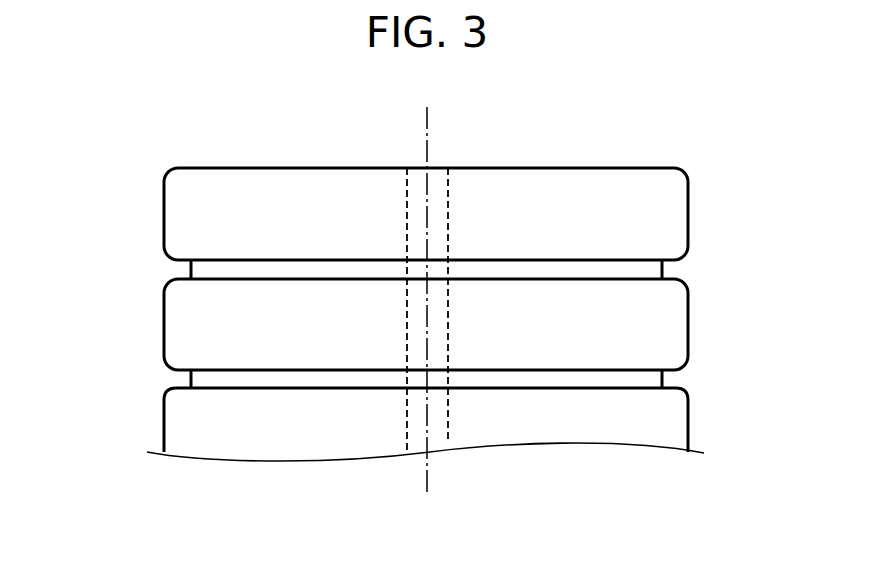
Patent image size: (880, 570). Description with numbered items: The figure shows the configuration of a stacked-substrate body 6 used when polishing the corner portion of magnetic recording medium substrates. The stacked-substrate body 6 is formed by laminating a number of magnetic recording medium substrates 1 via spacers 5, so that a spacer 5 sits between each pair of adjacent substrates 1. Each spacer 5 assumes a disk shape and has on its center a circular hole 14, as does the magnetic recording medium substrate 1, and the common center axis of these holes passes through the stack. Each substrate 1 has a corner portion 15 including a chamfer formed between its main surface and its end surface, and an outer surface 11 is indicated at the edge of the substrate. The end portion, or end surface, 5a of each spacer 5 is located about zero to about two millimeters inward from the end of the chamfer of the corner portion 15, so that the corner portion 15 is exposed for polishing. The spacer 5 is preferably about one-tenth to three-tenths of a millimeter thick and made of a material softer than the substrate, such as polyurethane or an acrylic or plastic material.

The magnetic recording medium substrate 1 is at (355, 193).
The spacer 5 is at (480, 270).
The end portion (end surface) of the spacer 5a is at (190, 268).
The stacked-substrate body 6 is at (311, 146).
The outer peripheral surface 11 is at (164, 213).
The circular hole 14 is at (441, 182).
The corner portion 15 is at (164, 258).